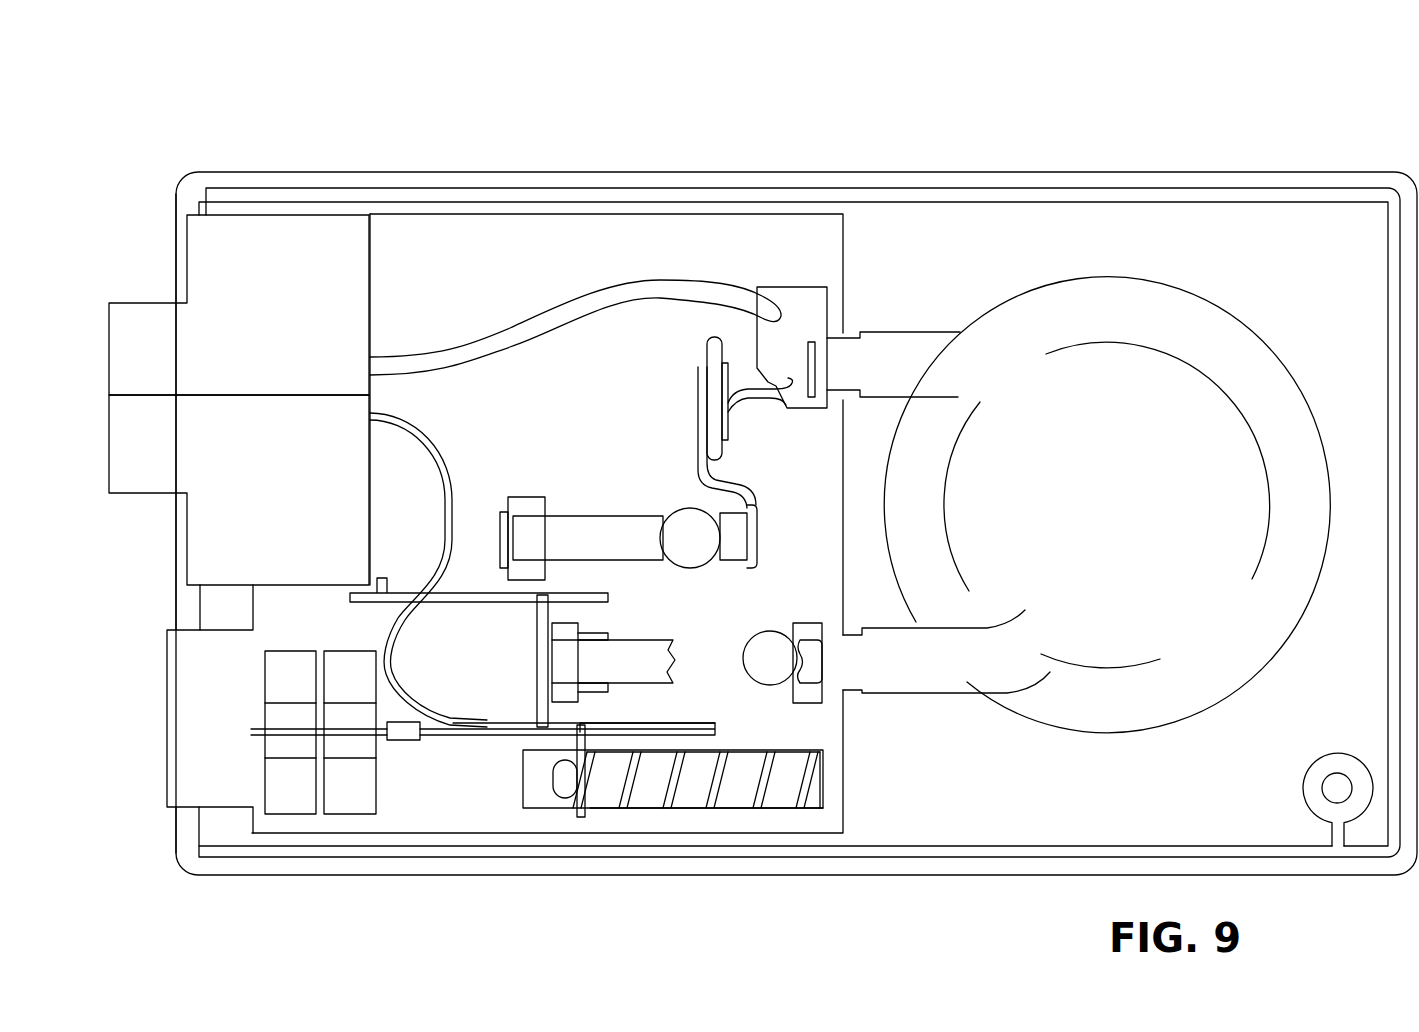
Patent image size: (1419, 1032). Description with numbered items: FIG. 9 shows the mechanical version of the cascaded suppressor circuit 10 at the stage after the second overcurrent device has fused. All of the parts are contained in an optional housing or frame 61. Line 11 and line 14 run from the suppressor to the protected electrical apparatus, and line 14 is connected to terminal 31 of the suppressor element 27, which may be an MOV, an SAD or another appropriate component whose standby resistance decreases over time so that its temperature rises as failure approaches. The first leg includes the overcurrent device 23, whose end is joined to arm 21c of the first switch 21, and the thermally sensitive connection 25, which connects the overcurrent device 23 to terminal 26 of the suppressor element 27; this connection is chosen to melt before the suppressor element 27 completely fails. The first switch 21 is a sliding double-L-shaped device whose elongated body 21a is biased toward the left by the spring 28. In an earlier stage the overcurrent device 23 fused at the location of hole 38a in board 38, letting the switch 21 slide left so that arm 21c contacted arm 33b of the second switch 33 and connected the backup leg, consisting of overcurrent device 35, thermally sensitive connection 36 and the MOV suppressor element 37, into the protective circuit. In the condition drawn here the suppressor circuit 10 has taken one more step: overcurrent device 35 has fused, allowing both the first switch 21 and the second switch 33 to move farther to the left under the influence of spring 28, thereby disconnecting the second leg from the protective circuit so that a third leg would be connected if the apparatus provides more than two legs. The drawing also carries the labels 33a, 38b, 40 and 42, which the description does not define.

The suppressor circuit 10 is at (218, 106).
The line 11 is at (233, 458).
The line 14 is at (233, 360).
The first switch 21 is at (552, 748).
The elongated body 21a is at (525, 715).
The arm 21c is at (548, 713).
The overcurrent device 23 is at (665, 660).
The thermally sensitive connection 25 is at (840, 668).
The terminal 26 is at (915, 686).
The suppressor element 27 is at (1098, 518).
The spring 28 is at (737, 778).
The terminal 31 is at (902, 342).
The second switch 33 is at (486, 572).
The lever arm 33a is at (438, 607).
The arm 33b is at (546, 610).
The overcurrent device 35 is at (606, 522).
The thermally sensitive connection 36 is at (756, 533).
The suppressor element 37 is at (705, 352).
The board 38 is at (443, 285).
The hole 38a is at (751, 672).
The valve ball 38b is at (678, 508).
The control unit 40 is at (198, 728).
The capacitors 42 is at (238, 768).
The housing 61 is at (327, 876).